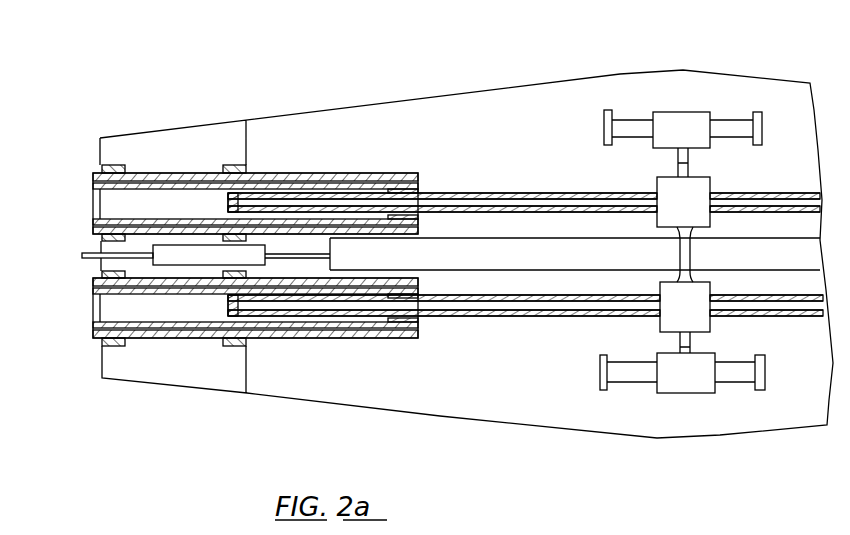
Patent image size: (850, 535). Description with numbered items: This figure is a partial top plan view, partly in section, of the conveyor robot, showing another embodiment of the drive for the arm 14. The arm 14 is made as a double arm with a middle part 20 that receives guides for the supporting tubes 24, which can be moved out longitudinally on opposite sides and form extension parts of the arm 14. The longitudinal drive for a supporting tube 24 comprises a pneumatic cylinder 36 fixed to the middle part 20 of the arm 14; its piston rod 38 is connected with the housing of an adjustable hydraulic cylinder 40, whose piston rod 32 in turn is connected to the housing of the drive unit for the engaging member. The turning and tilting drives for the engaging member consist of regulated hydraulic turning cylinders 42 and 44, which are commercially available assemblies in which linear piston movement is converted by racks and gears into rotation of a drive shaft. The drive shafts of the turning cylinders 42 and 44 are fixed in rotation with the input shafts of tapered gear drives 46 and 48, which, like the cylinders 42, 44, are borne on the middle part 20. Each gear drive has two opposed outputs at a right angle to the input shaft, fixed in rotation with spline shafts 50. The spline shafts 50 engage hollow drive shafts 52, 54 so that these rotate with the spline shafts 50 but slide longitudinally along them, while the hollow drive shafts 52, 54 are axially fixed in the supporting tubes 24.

The arm 14 is at (652, 70).
The middle part 20 is at (604, 92).
The supporting tubes 24 is at (343, 178).
The piston rod 32 is at (95, 253).
The pneumatic cylinder 36 is at (532, 252).
The piston rod 38 is at (320, 252).
The adjustable hydraulic cylinder 40 is at (182, 257).
The hydraulic turning cylinder 42 is at (700, 122).
The hydraulic turning cylinder 44 is at (667, 383).
The tapered gear drive 46 is at (698, 190).
The tapered gear drive 48 is at (702, 320).
The spline shafts 50 is at (480, 197).
The hollow drive shaft 52 is at (273, 190).
The hollow drive shaft 54 is at (300, 332).